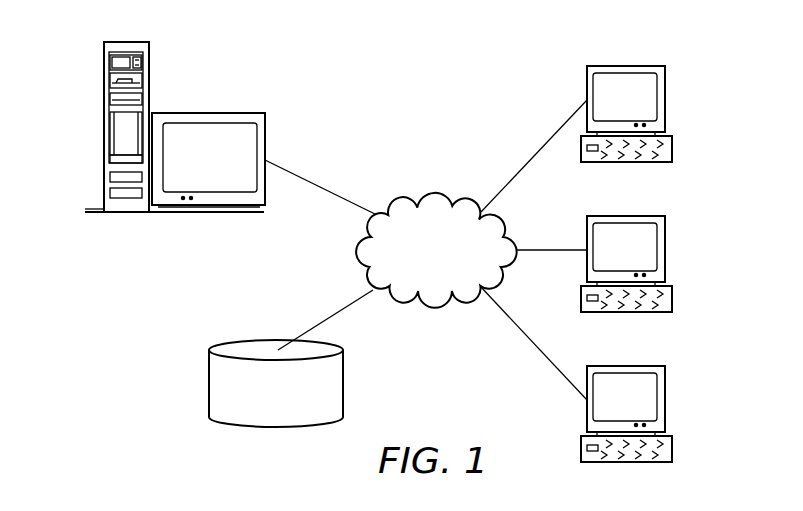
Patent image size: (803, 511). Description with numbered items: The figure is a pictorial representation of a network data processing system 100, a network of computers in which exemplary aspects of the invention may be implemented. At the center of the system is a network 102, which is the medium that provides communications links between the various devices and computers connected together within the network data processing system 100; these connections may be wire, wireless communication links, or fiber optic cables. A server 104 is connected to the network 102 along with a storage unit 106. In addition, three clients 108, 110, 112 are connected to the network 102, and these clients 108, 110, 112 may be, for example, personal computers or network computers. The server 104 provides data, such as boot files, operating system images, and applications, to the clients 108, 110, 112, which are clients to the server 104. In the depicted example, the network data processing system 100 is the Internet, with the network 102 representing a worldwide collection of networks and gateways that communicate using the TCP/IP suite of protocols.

The network data processing system 100 is at (490, 74).
The network 102 is at (407, 197).
The server 104 is at (104, 132).
The storage unit 106 is at (209, 383).
The client 108 is at (665, 100).
The client 110 is at (665, 251).
The client 112 is at (665, 400).